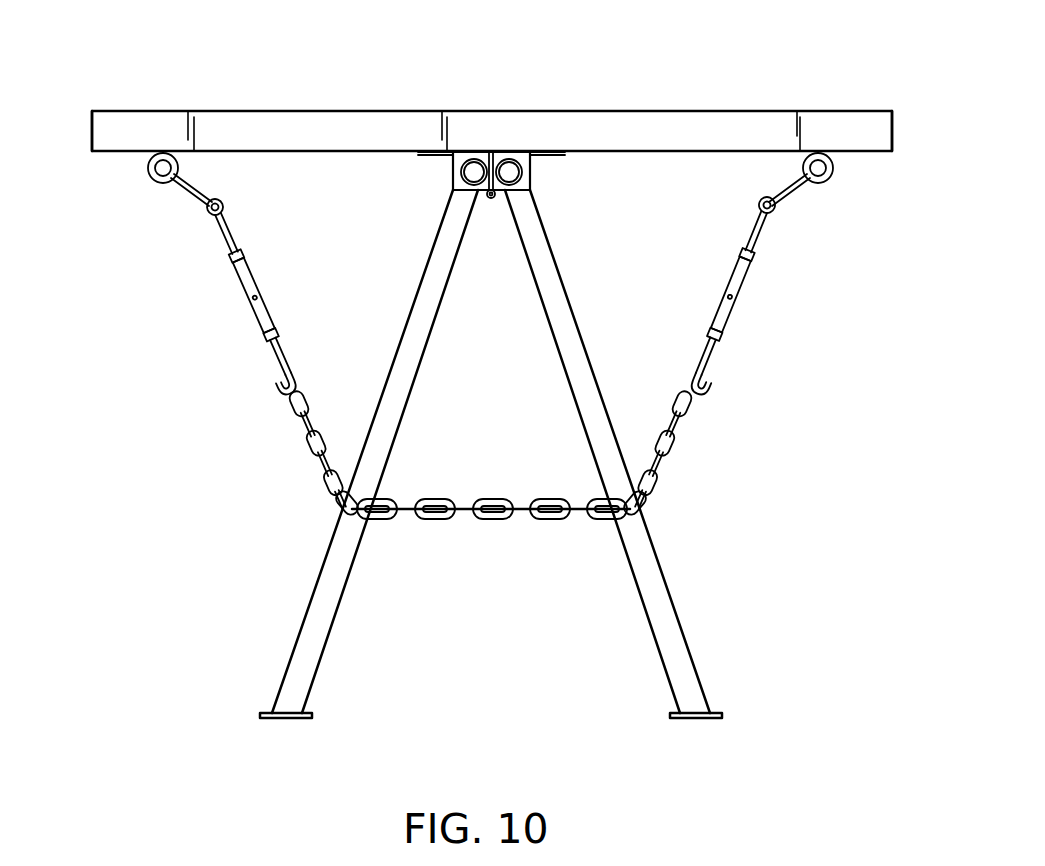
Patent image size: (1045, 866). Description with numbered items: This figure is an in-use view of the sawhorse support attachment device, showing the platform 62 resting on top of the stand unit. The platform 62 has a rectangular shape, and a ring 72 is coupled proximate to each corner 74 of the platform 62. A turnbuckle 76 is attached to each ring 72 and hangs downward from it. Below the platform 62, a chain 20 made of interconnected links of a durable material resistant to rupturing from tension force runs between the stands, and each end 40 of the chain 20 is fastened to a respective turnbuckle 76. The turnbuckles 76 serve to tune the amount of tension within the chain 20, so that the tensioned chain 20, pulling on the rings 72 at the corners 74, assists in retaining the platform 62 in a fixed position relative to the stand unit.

The platform 62 is at (681, 128).
The corners of the platform 74 is at (92, 130).
The ring 72 is at (148, 170).
The turnbuckle 76 is at (243, 286).
The ends of the chain 40 is at (300, 382).
The chain 20 is at (488, 521).